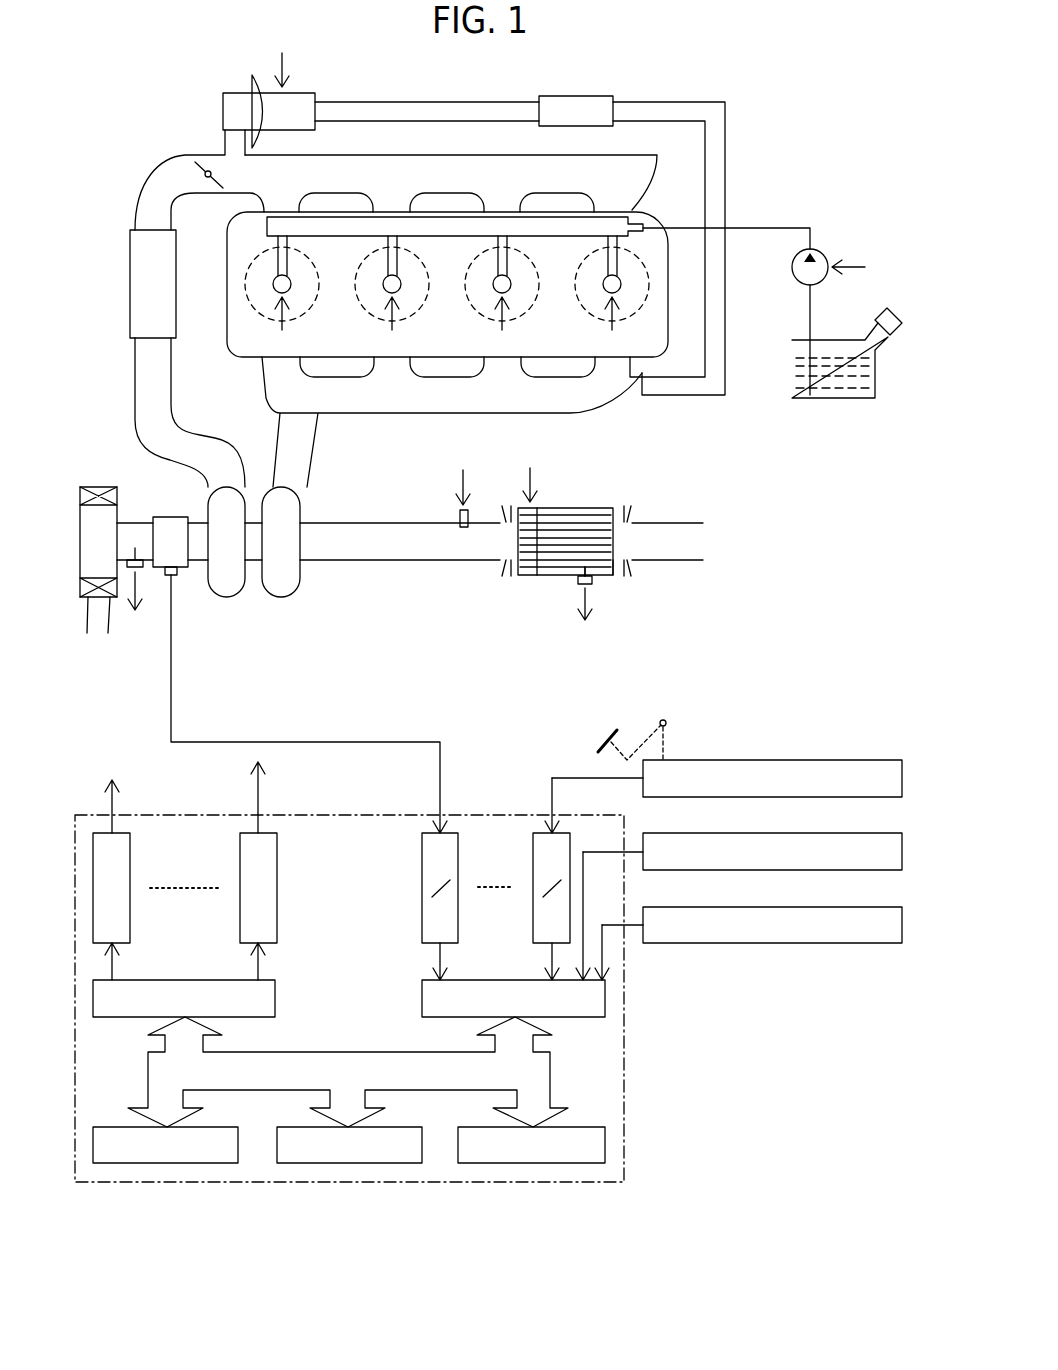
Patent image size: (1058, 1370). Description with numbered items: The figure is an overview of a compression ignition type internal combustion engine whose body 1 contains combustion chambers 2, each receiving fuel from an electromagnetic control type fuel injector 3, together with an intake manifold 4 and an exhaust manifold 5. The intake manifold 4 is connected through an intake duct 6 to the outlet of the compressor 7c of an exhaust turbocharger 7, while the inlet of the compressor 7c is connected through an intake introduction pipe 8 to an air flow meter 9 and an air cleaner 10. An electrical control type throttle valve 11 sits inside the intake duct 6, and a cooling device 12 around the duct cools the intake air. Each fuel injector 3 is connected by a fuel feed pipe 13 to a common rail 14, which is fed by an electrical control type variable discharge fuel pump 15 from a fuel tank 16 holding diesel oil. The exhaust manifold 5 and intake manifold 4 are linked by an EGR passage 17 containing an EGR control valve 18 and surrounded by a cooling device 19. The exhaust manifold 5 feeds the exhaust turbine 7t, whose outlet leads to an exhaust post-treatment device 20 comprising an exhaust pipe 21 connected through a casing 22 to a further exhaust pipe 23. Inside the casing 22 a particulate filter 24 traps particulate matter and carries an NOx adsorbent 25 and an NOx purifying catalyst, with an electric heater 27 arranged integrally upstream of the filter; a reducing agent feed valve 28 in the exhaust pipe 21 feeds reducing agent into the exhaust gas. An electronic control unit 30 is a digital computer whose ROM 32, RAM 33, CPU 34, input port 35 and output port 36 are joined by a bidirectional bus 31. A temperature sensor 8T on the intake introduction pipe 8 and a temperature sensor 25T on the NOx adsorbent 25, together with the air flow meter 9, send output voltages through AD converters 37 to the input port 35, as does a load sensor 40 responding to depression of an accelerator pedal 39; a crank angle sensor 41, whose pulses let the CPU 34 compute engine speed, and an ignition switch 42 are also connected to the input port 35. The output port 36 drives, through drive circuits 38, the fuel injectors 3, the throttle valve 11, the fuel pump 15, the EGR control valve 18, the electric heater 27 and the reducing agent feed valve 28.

The body of compression ignition type internal combustion engine 1 is at (752, 122).
The combustion chamber 2 is at (648, 302).
The fuel injector 3 is at (620, 292).
The intake manifold 4 is at (440, 155).
The exhaust manifold 5 is at (385, 413).
The intake duct 6 is at (138, 195).
The exhaust turbocharger 7 is at (287, 578).
The compressor 7c is at (228, 597).
The exhaust turbine 7t is at (282, 597).
The intake introduction pipe 8 is at (197, 565).
The temperature sensor 8T is at (135, 569).
The air flow meter 9 is at (170, 517).
The air cleaner 10 is at (100, 487).
The throttle valve 11 is at (203, 157).
The cooling device 12 is at (130, 300).
The fuel feed pipe 13 is at (627, 262).
The common rail 14 is at (612, 214).
The fuel pump 15 is at (830, 249).
The fuel tank 16 is at (838, 402).
The EGR passage 17 is at (477, 102).
The EGR control valve 18 is at (307, 93).
The cooling device 19 is at (593, 96).
The exhaust post-treatment device 20 is at (548, 563).
The exhaust pipe 21 is at (337, 522).
The casing 22 is at (613, 508).
The exhaust pipe 23 is at (687, 522).
The particulate filter 24 is at (613, 573).
The NOx adsorbent 25 is at (595, 567).
The temperature sensor 25T is at (575, 585).
The electric heater 27 is at (530, 575).
The reducing agent feed valve 28 is at (458, 512).
The electronic control unit 30 is at (356, 990).
The bidirectional bus 31 is at (550, 1077).
The ROM 32 is at (217, 1163).
The RAM 33 is at (397, 1163).
The CPU 34 is at (578, 1163).
The input port 35 is at (422, 995).
The output port 36 is at (275, 998).
The AD converter 37 is at (533, 852).
The drive circuit 38 is at (240, 852).
The accelerator pedal 39 is at (663, 720).
The load sensor 40 is at (830, 760).
The crank angle sensor 41 is at (830, 833).
The ignition switch 42 is at (830, 907).